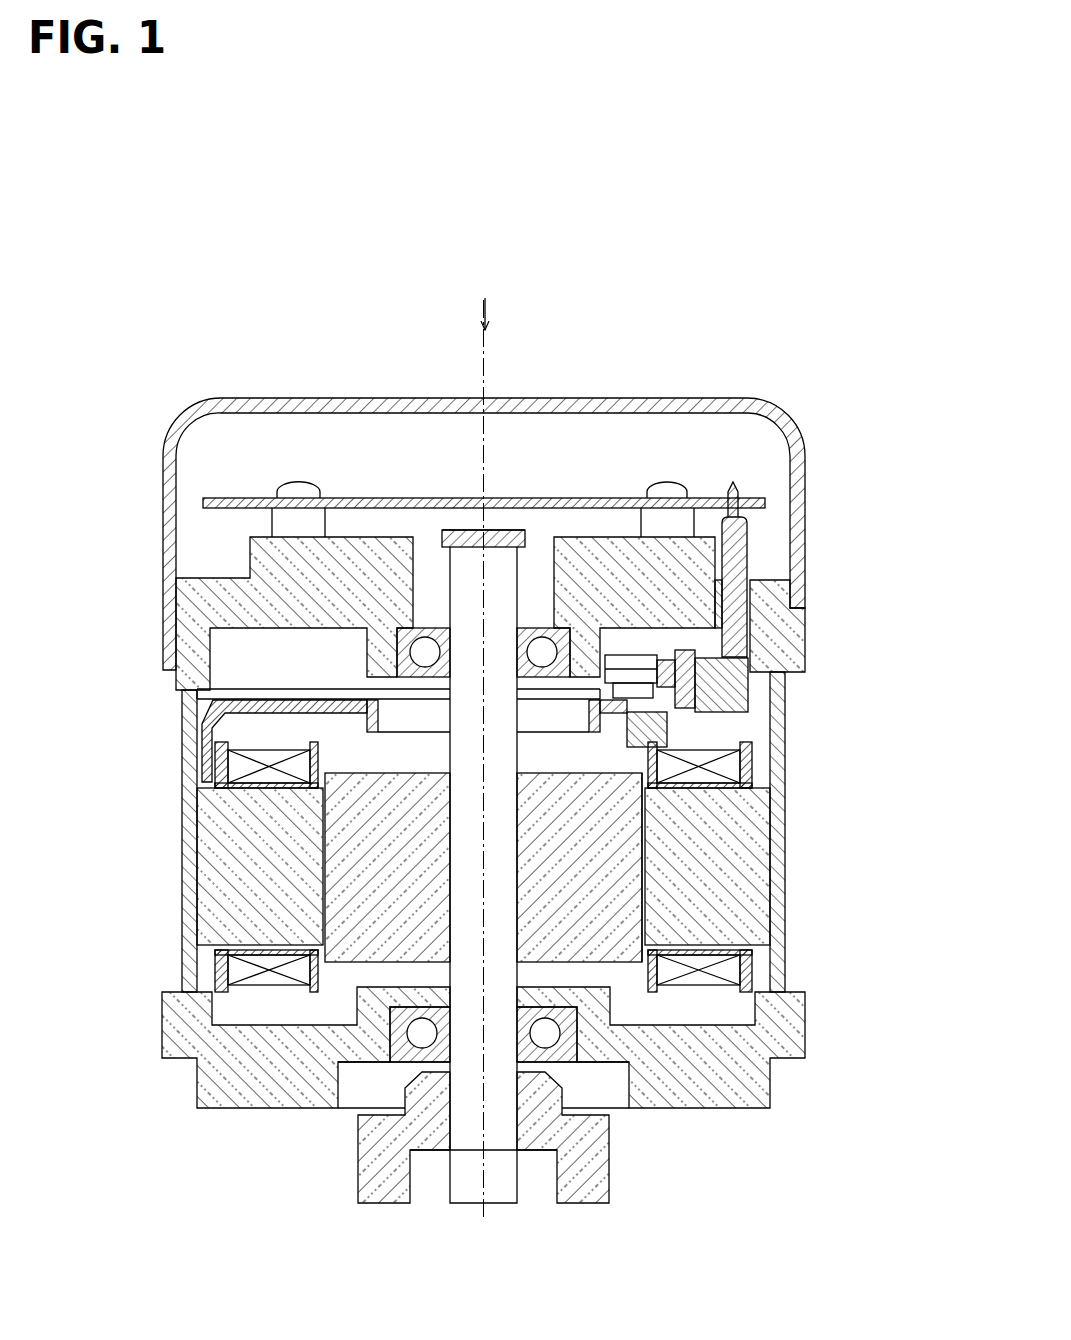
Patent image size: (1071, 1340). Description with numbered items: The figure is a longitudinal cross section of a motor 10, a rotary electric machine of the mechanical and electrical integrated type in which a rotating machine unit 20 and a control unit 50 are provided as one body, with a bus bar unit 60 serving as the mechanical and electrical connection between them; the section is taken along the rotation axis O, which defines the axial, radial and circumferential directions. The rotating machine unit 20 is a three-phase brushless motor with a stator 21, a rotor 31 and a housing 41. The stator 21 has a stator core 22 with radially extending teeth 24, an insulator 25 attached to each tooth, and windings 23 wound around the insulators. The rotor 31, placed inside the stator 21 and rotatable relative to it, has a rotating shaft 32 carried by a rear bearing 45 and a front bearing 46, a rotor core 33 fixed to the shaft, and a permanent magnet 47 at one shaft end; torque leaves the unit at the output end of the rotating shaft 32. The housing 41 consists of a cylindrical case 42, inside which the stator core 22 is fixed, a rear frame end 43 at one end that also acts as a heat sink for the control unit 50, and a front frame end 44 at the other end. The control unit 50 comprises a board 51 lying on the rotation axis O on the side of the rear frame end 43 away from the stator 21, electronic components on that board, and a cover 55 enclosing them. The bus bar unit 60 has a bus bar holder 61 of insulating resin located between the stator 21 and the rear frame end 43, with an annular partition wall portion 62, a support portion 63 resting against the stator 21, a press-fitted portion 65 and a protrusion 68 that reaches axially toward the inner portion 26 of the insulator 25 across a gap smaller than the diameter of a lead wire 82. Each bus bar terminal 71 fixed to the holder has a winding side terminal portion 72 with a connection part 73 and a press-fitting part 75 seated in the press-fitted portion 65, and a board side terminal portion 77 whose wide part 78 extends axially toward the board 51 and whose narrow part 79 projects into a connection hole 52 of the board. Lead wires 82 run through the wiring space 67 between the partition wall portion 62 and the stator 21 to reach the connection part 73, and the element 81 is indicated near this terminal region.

The motor 10 is at (213, 385).
The rotating machine unit 20 is at (225, 1110).
The stator 21 is at (190, 945).
The stator core 22 is at (240, 812).
The windings 23 is at (260, 770).
The teeth 24 is at (705, 875).
The insulator 25 is at (700, 765).
The inner portion 26 is at (748, 775).
The rotor 31 is at (342, 962).
The rotating shaft 32 is at (470, 940).
The rotor core 33 is at (345, 860).
The housing 41 is at (195, 1098).
The case 42 is at (197, 887).
The rear frame end 43 is at (255, 560).
The front frame end 44 is at (255, 1060).
The rear bearing 45 is at (428, 640).
The front bearing 46 is at (417, 1035).
The permanent magnet 47 is at (455, 535).
The control unit 50 is at (165, 480).
The board 51 is at (508, 530).
The connection hole 52 is at (722, 500).
The cover 55 is at (783, 410).
The bus bar unit 60 is at (645, 648).
The bus bar holder 61 is at (300, 690).
The partition wall portion 62 is at (330, 735).
The support portion 63 is at (215, 750).
The press-fitted portion 65 is at (700, 700).
The wiring space 67 is at (325, 735).
The protrusion 68 is at (655, 790).
The bus bar terminal 71 is at (903, 485).
The winding side terminal portion 72 is at (770, 598).
The connection part 73 is at (615, 663).
The press-fitting part 75 is at (690, 652).
The board side terminal portion 77 is at (856, 462).
The wide part 78 is at (745, 540).
The narrow part 79 is at (740, 496).
The lead holder 81 is at (660, 740).
The lead wire 82 is at (680, 715).
The rotation axis O is at (495, 1190).